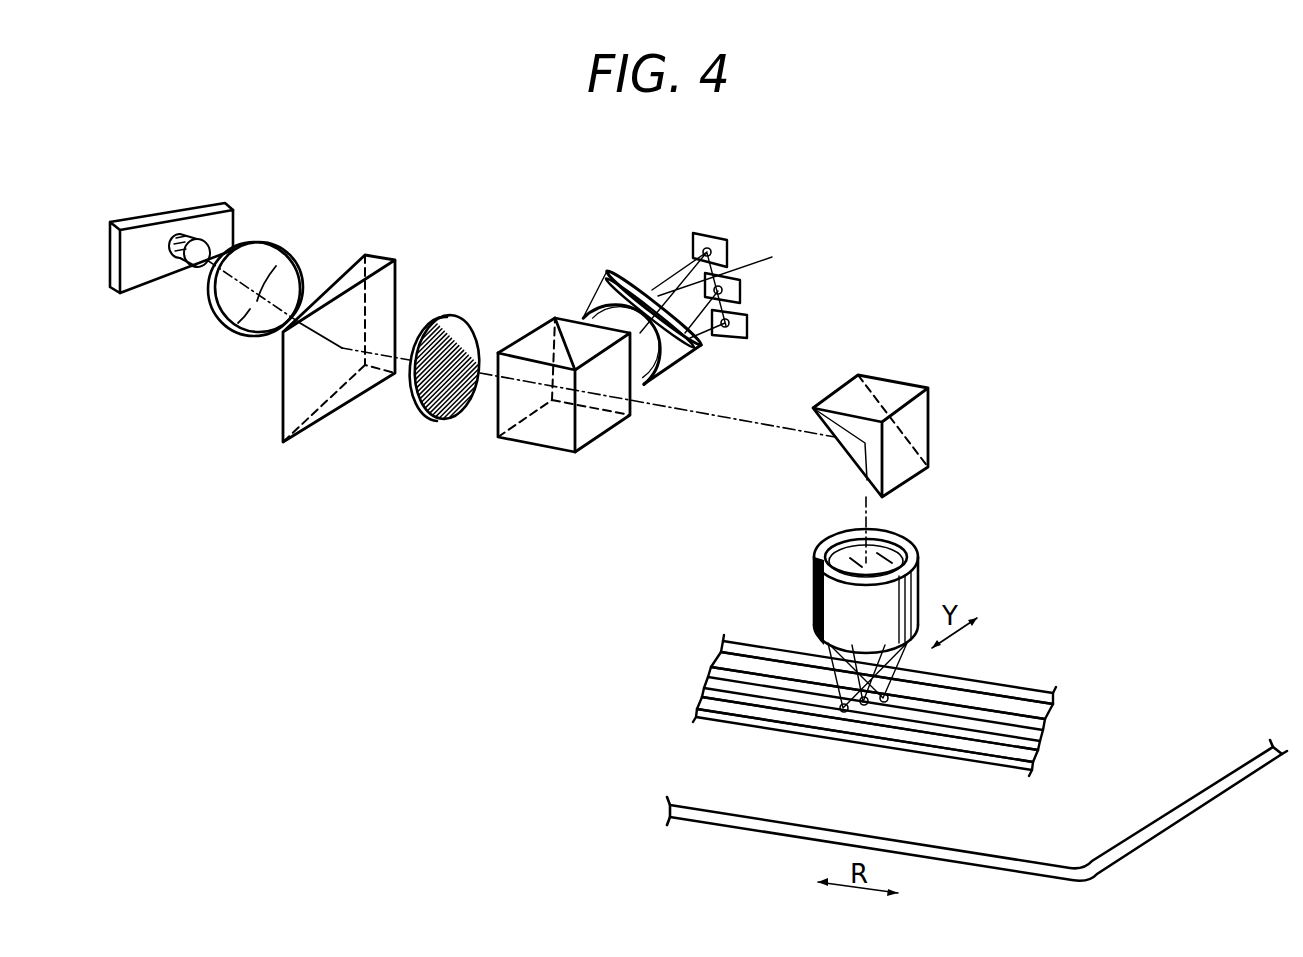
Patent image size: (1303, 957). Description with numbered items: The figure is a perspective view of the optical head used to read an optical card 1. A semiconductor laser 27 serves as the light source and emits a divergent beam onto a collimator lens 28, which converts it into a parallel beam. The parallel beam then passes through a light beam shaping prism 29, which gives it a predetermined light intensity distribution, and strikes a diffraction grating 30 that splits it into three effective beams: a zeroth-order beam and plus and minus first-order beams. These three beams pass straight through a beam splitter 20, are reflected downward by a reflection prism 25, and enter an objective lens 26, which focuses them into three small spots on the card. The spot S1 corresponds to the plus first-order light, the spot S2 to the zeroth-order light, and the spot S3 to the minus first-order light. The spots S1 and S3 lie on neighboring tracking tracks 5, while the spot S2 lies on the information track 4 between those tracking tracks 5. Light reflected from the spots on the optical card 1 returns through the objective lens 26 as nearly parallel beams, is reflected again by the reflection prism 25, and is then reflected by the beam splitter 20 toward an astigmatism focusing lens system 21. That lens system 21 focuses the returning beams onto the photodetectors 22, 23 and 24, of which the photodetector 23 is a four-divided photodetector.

The optical card 1 is at (775, 830).
The information track 4 is at (1038, 743).
The tracking tracks 5 is at (1043, 720).
The beam splitter 20 is at (550, 438).
The astigmatism focusing lens system 21 is at (587, 291).
The photodetector 22 is at (713, 233).
The photodetector 23 is at (742, 291).
The photodetector 24 is at (747, 327).
The reflection prism 25 is at (893, 387).
The objective lens 26 is at (918, 580).
The semiconductor laser 27 is at (227, 203).
The collimator lens 28 is at (273, 250).
The light beam shaping prism 29 is at (378, 258).
The diffraction grating 30 is at (463, 320).
The light beam spot S1 is at (843, 712).
The light beam spot S2 is at (863, 705).
The light beam spot S3 is at (884, 702).